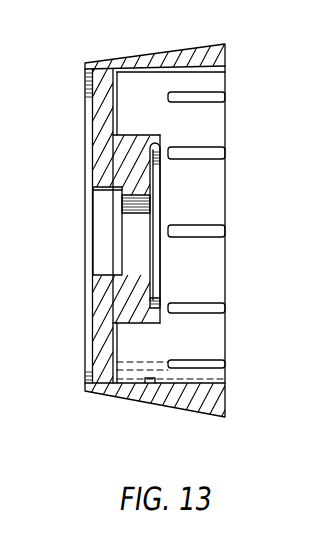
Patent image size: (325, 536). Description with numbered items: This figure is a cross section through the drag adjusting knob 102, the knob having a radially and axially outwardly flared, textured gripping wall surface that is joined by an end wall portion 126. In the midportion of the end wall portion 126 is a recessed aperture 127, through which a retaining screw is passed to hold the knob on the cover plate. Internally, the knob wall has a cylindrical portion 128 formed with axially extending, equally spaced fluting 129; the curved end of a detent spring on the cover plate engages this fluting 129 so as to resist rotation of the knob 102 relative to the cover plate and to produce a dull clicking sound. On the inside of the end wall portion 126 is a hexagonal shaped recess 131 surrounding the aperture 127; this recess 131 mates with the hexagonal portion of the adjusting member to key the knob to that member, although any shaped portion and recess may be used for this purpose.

The drag adjusting knob 102 is at (155, 53).
The end wall portion 126 is at (90, 128).
The recessed aperture 127 is at (122, 208).
The cylindrical portion 128 is at (150, 384).
The fluting 129 is at (213, 148).
The hexagonal shaped recess 131 is at (157, 299).